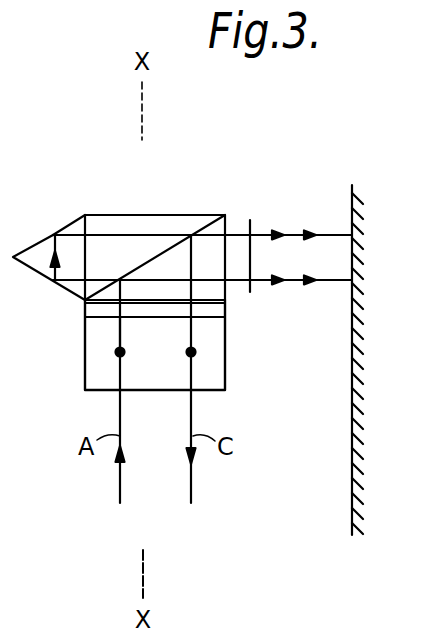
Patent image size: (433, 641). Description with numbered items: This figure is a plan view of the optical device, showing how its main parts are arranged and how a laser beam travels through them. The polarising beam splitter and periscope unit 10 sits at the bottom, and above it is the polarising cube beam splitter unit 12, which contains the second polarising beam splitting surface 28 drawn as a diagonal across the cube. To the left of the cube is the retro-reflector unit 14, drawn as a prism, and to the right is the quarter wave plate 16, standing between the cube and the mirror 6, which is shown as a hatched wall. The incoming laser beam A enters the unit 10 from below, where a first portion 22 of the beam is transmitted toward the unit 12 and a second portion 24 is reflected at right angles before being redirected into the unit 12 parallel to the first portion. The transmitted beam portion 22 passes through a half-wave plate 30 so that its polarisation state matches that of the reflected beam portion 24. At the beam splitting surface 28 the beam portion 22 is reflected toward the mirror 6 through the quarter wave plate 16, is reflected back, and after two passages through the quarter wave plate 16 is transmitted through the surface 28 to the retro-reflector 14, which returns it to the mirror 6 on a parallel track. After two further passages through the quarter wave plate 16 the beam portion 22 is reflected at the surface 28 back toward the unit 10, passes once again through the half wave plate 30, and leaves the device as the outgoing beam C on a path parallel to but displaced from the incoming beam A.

The mirror 6 is at (350, 418).
The polarising beam splitter and periscope unit 10 is at (226, 369).
The polarising cube beam splitter unit 12 is at (196, 215).
The retro-reflector unit 14 is at (54, 235).
The quarter wave plate 16 is at (252, 225).
The first portion of the beam 22 is at (119, 328).
The second portion of the beam 24 is at (118, 353).
The second polarising beam splitting surface 28 is at (150, 263).
The half-wave plate 30 is at (226, 308).